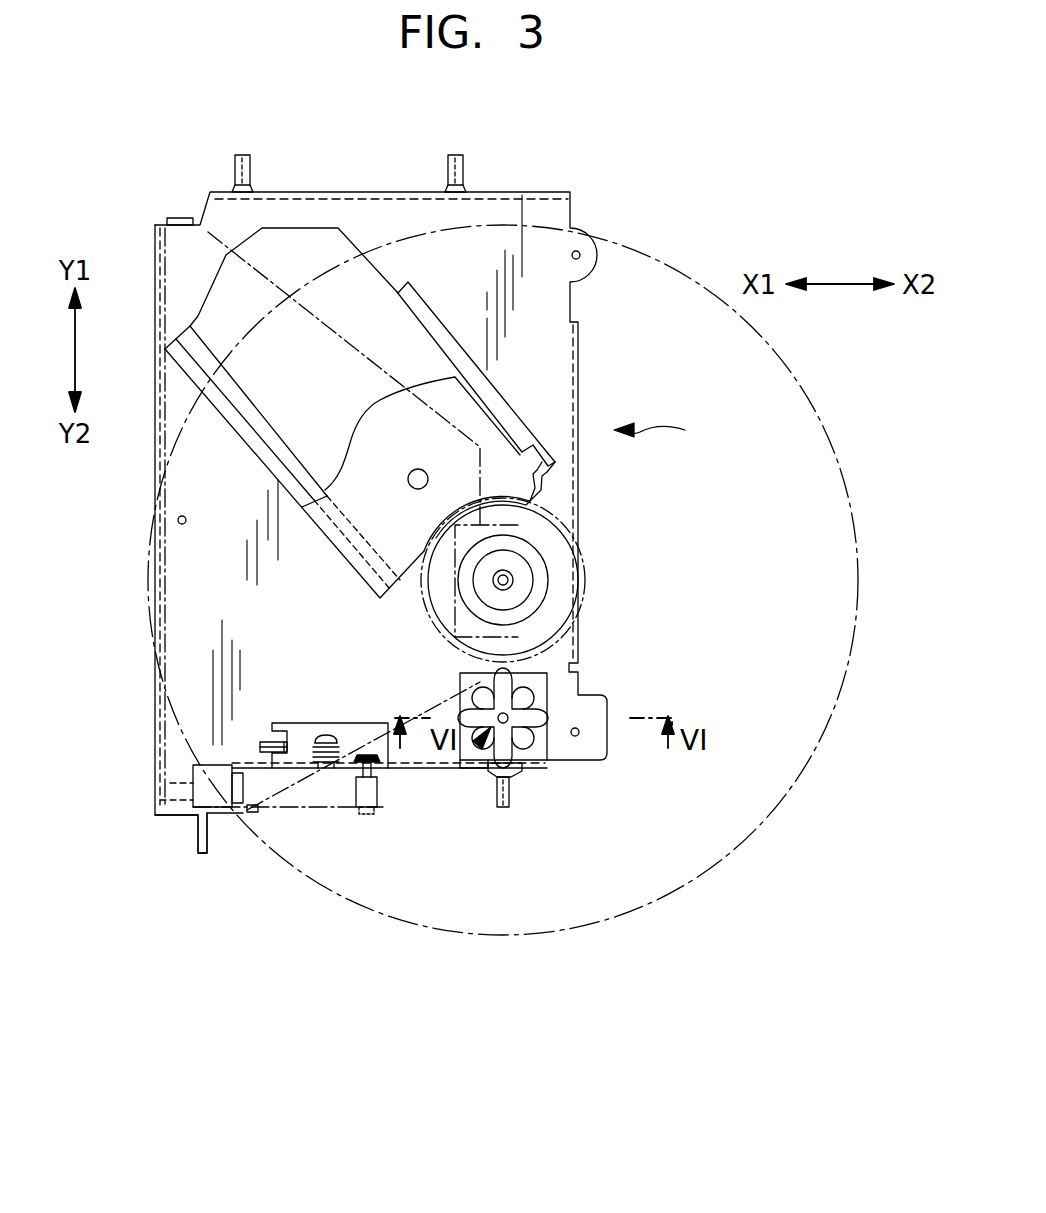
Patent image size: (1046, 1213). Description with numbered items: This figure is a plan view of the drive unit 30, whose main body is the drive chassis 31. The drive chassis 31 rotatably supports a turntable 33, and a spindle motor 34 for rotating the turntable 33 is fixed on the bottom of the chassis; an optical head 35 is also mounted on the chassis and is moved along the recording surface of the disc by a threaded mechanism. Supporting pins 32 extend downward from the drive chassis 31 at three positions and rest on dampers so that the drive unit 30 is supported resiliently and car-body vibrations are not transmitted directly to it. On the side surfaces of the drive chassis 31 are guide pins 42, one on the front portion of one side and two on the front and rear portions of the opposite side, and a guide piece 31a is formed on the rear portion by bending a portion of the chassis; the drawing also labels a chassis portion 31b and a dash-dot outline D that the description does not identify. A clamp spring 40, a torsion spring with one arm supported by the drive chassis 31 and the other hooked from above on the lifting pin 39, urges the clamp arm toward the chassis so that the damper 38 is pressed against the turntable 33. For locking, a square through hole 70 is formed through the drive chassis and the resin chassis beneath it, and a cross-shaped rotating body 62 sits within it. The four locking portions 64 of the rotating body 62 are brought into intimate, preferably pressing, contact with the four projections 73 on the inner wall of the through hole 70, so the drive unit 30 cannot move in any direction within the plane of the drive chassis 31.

The drive unit 30 is at (669, 431).
The drive chassis 31 is at (580, 358).
The guide piece 31a is at (240, 790).
The bent foot of chassis 31b is at (198, 845).
The supporting pins 32 is at (580, 258).
The turntable 33 is at (548, 530).
The spindle motor 34 is at (588, 570).
The optical head 35 is at (375, 432).
The damper 38 is at (552, 624).
The lifting pin 39 is at (378, 790).
The clamp spring 40 is at (306, 735).
The guide pins 42 is at (247, 165).
The rotating body 62 is at (470, 762).
The locking portions 64 is at (480, 700).
The through hole 70 is at (457, 676).
The projections 73 is at (500, 678).
The disk outline D is at (584, 936).